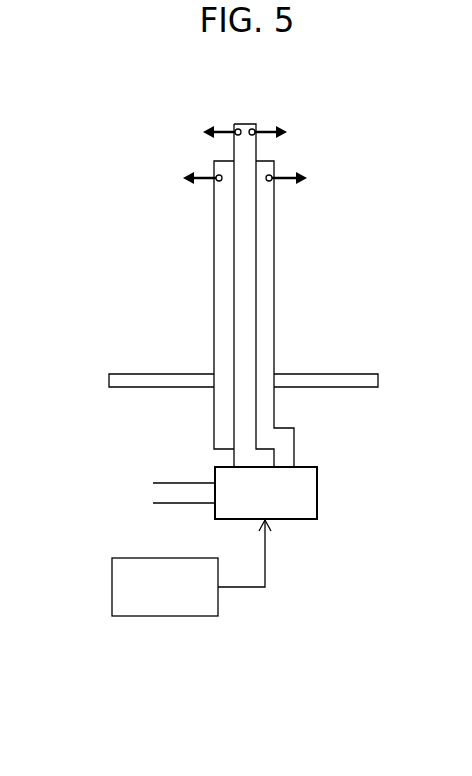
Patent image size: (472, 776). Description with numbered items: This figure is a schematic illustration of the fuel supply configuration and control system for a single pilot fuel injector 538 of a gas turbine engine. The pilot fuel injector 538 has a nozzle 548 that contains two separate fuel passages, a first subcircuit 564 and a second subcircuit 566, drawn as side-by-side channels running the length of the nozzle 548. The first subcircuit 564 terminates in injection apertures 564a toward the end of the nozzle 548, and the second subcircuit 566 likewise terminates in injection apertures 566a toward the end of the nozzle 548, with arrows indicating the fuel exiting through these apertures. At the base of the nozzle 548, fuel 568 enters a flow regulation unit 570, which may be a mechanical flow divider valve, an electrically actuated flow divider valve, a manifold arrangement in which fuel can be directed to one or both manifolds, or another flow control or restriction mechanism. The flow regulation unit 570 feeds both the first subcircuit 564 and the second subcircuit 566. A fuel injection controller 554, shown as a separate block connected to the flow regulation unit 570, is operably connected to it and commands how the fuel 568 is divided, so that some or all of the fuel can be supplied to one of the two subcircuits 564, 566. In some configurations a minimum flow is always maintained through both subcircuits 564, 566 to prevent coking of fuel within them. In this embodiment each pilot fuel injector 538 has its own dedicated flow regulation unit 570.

The pilot fuel injector 538 is at (92, 130).
The nozzle 548 is at (212, 303).
The first subcircuit 564 is at (225, 258).
The second subcircuit 566 is at (245, 289).
The injection apertures 566a is at (255, 129).
The injection apertures 564a is at (272, 182).
The flow regulation unit 570 is at (266, 493).
The fuel 568 is at (180, 493).
The fuel injection controller 554 is at (191, 568).